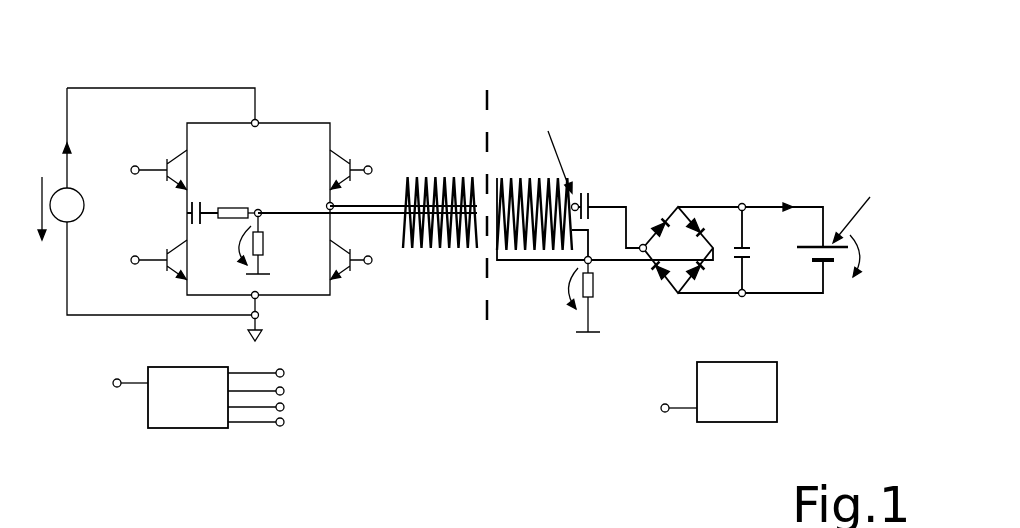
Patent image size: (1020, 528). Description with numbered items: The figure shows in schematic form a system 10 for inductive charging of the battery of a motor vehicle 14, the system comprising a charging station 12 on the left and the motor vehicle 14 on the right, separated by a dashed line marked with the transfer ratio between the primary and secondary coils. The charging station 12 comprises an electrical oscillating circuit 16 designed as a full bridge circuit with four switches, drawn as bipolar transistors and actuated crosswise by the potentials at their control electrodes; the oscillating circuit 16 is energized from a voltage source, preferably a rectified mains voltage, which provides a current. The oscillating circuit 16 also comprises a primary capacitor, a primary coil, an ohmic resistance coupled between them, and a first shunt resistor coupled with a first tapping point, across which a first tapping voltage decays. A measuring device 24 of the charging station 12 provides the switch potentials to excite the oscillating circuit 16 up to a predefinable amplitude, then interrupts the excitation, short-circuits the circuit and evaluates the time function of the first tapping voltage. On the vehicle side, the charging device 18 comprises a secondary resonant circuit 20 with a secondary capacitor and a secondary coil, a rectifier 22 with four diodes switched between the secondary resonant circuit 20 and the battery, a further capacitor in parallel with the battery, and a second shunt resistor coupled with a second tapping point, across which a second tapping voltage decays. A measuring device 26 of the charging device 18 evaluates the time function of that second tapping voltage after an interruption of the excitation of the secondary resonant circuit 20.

The system for inductive charging 10 is at (505, 46).
The charging station 12 is at (262, 46).
The motor vehicle 14 is at (690, 63).
The electrical oscillating circuit 16 is at (422, 117).
The charging device 18 is at (757, 126).
The secondary resonant circuit 20 is at (619, 178).
The rectifier 22 is at (713, 314).
The measuring device 24 is at (173, 390).
The measuring device 26 is at (755, 405).